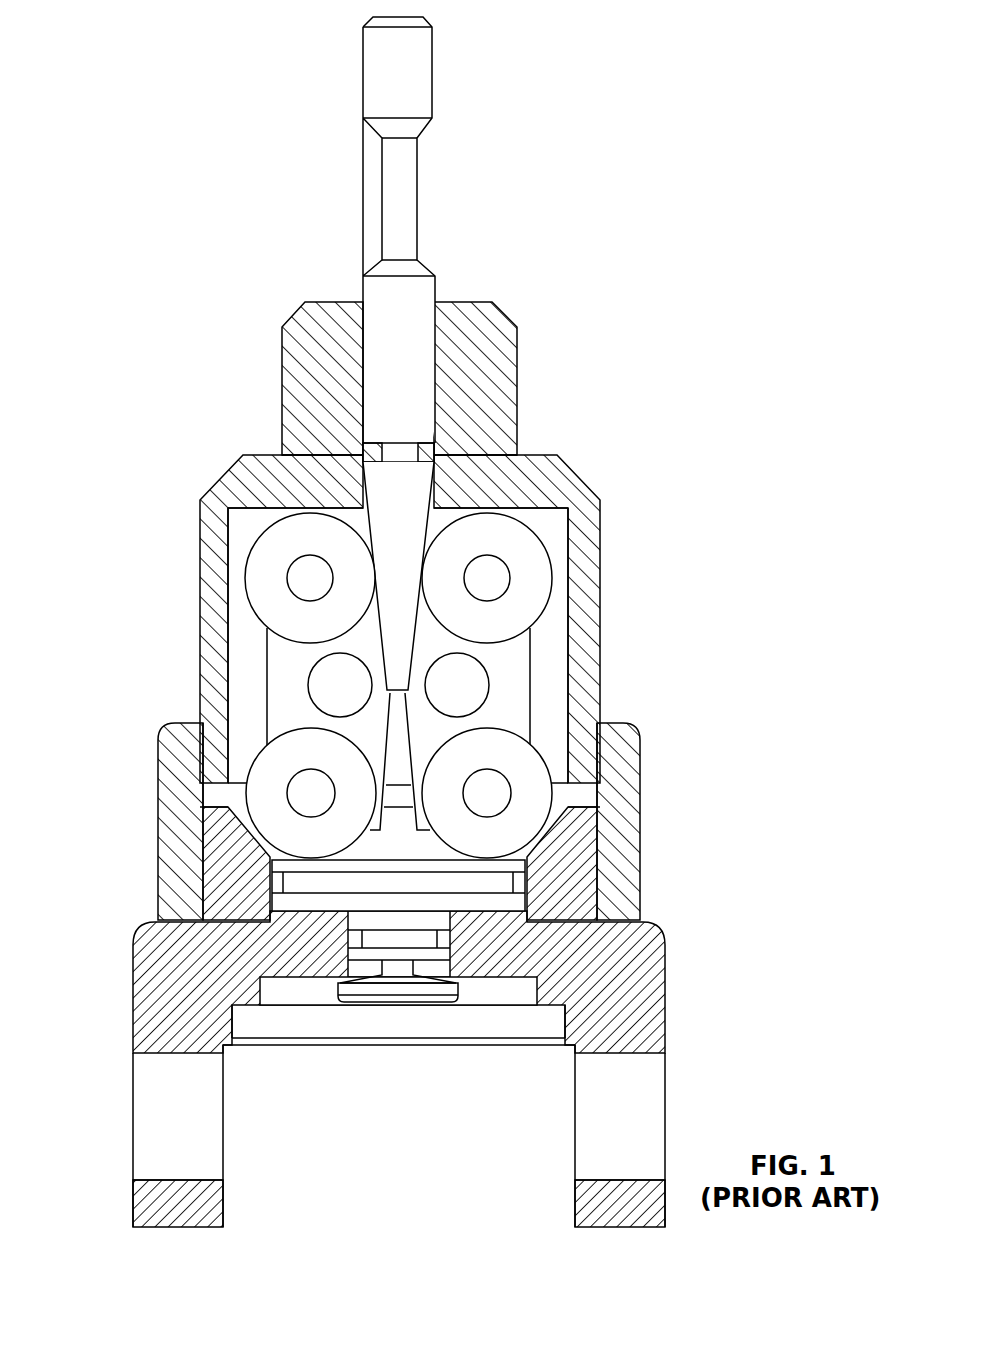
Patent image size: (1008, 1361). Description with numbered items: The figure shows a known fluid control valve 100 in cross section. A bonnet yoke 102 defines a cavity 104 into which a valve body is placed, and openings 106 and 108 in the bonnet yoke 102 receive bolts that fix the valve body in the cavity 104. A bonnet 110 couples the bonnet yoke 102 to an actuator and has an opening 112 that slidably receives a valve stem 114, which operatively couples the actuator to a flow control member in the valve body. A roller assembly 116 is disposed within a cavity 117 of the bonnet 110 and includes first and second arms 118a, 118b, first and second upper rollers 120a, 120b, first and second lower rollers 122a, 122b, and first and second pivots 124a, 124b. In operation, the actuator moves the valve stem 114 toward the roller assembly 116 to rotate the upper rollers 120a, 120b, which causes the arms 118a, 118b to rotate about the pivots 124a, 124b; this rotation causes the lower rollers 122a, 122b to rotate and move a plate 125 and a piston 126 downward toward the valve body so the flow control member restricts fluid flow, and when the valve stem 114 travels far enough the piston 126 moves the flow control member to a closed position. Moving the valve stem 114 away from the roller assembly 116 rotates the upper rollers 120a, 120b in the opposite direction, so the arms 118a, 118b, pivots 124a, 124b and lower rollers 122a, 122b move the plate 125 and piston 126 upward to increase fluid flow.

The fluid control valve 100 is at (146, 111).
The bonnet yoke 102 is at (177, 1226).
The cavity 104 is at (406, 1117).
The opening 106 is at (133, 1112).
The opening 108 is at (665, 1107).
The bonnet 110 is at (602, 525).
The opening 112 is at (280, 503).
The valve stem 114 is at (417, 236).
The roller assembly 116 is at (553, 672).
The cavity 117 is at (550, 521).
The first arm 118a is at (277, 650).
The second arm 118b is at (523, 648).
The first upper roller 120a is at (262, 568).
The second upper roller 120b is at (533, 582).
The first lower roller 122a is at (260, 793).
The second lower roller 122b is at (538, 793).
The first pivot 124a is at (323, 683).
The second pivot 124b is at (473, 683).
The plate 125 is at (483, 902).
The piston 126 is at (347, 988).